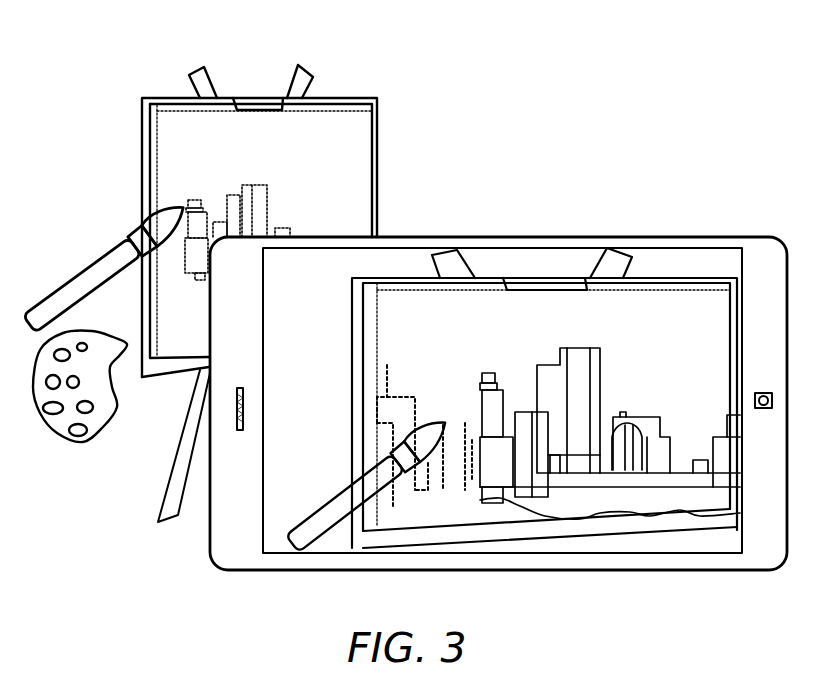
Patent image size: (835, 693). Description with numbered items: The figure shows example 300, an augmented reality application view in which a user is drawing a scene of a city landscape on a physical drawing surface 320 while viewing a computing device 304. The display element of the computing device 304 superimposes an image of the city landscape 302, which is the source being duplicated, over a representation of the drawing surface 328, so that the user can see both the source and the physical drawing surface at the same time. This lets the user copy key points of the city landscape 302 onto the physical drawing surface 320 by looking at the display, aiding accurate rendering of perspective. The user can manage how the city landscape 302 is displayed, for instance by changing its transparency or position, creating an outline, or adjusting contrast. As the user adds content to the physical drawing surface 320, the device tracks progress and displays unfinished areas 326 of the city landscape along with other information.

The example 300 is at (738, 103).
The city landscape 302 is at (659, 397).
The computing device 304 is at (757, 236).
The physical drawing surface 320 is at (153, 97).
The unfinished areas 326 is at (388, 395).
The representation of the drawing surface 328 is at (352, 302).